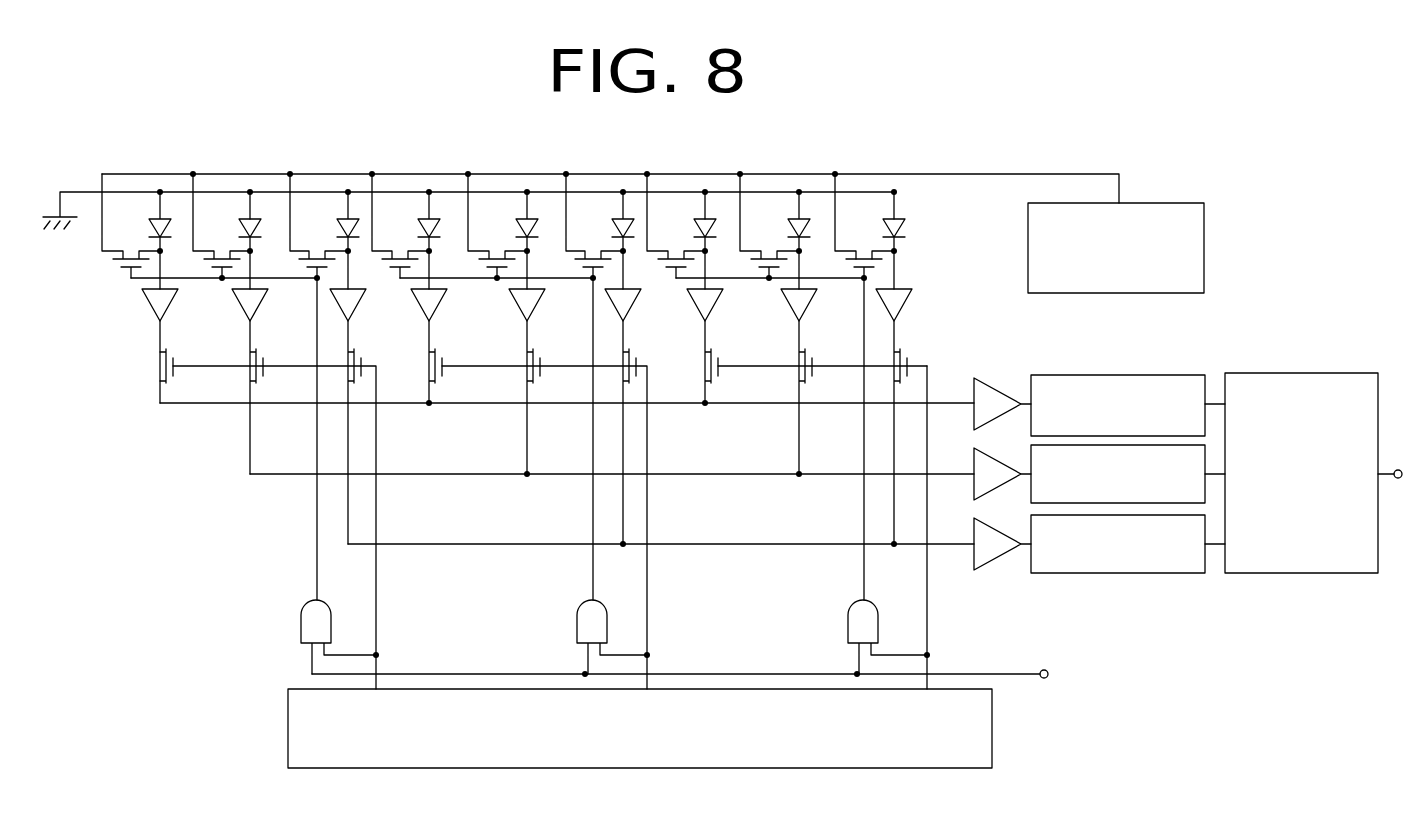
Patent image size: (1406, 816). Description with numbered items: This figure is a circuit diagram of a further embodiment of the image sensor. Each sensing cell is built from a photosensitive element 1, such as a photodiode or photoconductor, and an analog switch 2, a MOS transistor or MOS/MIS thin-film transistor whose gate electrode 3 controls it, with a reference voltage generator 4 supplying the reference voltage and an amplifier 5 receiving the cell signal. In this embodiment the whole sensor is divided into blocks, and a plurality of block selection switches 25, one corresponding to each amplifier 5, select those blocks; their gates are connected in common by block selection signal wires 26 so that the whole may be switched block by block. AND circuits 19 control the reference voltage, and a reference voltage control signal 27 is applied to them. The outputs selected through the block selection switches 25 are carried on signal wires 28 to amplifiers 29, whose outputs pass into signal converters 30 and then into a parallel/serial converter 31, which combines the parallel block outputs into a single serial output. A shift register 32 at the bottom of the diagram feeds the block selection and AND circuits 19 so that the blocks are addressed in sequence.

The photosensitive element 1 is at (243, 228).
The analog switch 2 is at (880, 262).
The gate electrode 3 is at (863, 298).
The reference voltage generator 4 is at (1204, 243).
The amplifier 5 is at (170, 305).
The AND circuit 19 is at (847, 622).
The block selection switch 25 is at (157, 363).
The block selection signal wire 26 is at (927, 603).
The reference voltage control signal 27 is at (1050, 671).
The signal wire 28 is at (953, 400).
The amplifier 29 is at (1008, 380).
The signal converter 30 is at (1140, 373).
The parallel/serial converter 31 is at (1285, 373).
The shift register 32 is at (992, 728).